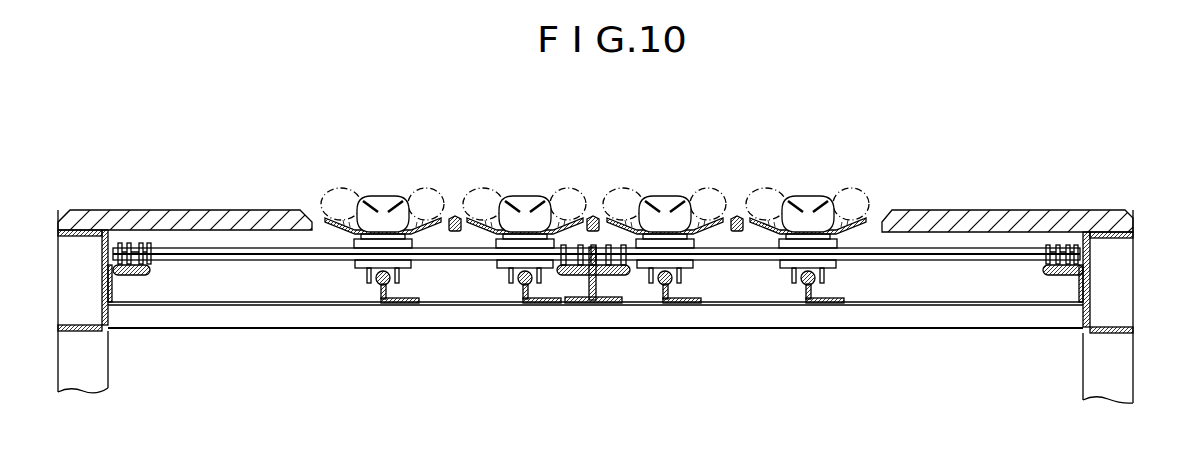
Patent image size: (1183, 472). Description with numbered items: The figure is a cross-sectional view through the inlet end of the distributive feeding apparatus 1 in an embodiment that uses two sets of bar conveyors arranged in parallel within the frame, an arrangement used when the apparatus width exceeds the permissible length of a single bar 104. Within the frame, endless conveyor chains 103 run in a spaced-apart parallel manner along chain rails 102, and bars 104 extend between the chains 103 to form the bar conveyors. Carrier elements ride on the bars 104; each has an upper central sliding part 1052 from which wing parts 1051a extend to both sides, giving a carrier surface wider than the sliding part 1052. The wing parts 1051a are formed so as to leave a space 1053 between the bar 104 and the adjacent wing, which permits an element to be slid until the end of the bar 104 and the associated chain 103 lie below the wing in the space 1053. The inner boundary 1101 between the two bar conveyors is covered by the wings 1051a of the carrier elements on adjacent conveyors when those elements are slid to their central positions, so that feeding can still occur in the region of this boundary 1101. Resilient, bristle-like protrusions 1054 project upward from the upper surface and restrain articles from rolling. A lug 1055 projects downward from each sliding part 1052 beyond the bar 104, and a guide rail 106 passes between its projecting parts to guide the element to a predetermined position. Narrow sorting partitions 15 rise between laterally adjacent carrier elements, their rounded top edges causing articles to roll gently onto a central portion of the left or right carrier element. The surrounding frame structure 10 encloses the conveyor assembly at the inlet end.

The distributive feeding apparatus 1 is at (957, 209).
The frame 10 is at (1098, 250).
The sorting partition 15 is at (456, 216).
The chain rail 102 is at (622, 278).
The endless conveyor chain 103 is at (563, 270).
The bar 104 is at (230, 260).
The guide rail 106 is at (380, 285).
The wing part 1051a is at (468, 262).
The sliding part 1052 is at (836, 268).
The space 1053 is at (415, 197).
The resilient protrusion 1054 is at (323, 193).
The lug 1055 is at (368, 274).
The inner boundary 1101 is at (555, 197).